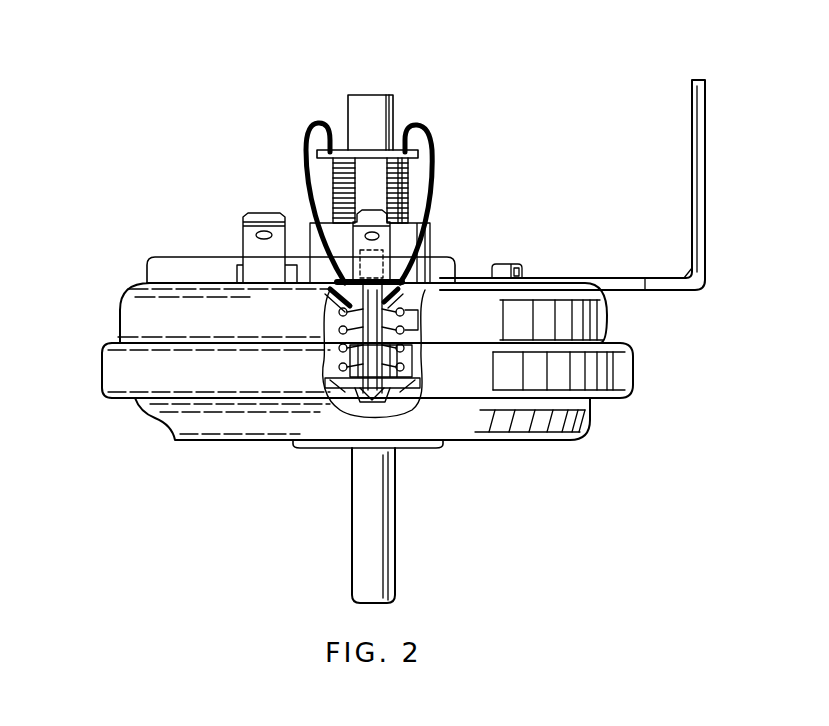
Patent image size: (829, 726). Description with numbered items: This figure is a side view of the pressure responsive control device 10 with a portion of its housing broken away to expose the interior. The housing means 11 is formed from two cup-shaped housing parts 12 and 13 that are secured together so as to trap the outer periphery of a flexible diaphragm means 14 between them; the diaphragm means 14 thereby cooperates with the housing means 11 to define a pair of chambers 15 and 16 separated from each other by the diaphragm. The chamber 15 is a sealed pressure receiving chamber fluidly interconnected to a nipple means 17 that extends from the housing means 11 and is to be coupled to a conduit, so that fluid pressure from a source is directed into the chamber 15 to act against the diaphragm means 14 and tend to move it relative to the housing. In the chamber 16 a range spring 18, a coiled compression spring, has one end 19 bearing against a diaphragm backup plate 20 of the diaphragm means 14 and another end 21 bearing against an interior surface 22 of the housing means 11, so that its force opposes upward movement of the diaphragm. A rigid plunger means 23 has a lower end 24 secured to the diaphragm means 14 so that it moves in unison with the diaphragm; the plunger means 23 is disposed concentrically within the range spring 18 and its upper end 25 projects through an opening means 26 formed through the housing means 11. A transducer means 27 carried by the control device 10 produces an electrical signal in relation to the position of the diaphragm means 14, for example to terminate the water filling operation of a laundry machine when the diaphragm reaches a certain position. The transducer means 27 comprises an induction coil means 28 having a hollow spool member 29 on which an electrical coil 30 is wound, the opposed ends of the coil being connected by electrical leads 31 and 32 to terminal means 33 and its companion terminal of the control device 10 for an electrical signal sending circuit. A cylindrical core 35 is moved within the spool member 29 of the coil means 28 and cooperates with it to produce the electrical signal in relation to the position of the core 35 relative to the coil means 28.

The pressure responsive control device 10 is at (613, 70).
The housing means 11 is at (120, 331).
The cup-shaped housing part 12 is at (137, 303).
The cup-shaped housing part 13 is at (160, 417).
The flexible diaphragm means 14 is at (340, 390).
The chamber 15 is at (363, 407).
The chamber 16 is at (330, 350).
The nipple means 17 is at (358, 556).
The range spring 18 is at (330, 330).
The end of range spring 19 is at (421, 348).
The diaphragm backup plate 20 is at (415, 368).
The end of range spring 21 is at (328, 306).
The interior surface 22 is at (432, 312).
The rigid plunger means 23 is at (408, 282).
The lower end of plunger means 24 is at (363, 358).
The upper end of plunger means 25 is at (393, 277).
The opening means 26 is at (328, 280).
The transducer means 27 is at (412, 119).
The induction coil means 28 is at (332, 173).
The hollow spool member 29 is at (318, 153).
The electrical coil 30 is at (405, 185).
The electrical lead 31 is at (308, 133).
The electrical lead 32 is at (432, 150).
The terminal means 33 is at (400, 212).
The cylindrical core 35 is at (402, 98).